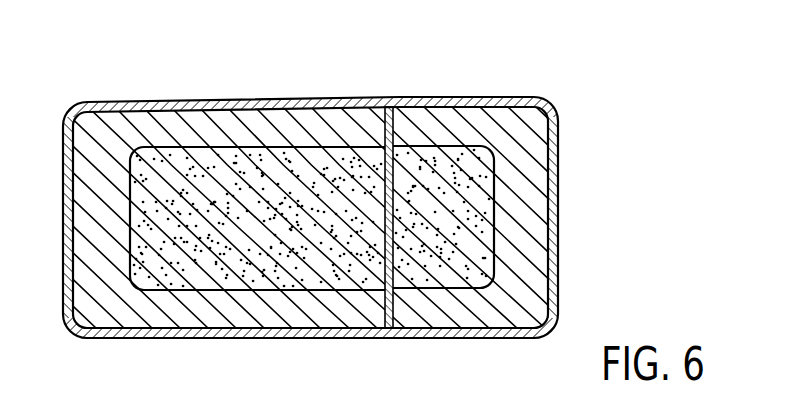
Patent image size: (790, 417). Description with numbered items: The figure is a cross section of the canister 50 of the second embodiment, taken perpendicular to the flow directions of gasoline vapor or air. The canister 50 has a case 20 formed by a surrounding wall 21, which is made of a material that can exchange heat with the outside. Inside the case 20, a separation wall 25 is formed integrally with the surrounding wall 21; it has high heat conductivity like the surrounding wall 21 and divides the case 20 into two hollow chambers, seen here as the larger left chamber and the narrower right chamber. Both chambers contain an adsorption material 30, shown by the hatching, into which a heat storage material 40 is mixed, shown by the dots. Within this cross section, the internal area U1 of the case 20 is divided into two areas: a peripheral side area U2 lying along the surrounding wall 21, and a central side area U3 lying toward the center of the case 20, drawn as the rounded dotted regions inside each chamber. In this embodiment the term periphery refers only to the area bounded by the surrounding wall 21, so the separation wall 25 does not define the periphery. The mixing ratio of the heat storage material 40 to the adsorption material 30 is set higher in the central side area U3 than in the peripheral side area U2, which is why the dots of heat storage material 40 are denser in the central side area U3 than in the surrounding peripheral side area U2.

The canister 50 is at (553, 97).
The case 20 is at (310, 257).
The surrounding wall 21 is at (333, 334).
The adsorption material 30 is at (507, 125).
The separation wall 25 is at (397, 108).
The heat storage material 40 is at (265, 153).
The central side area U3 is at (437, 155).
The peripheral side area U2 is at (530, 200).
The internal area U1 is at (502, 300).